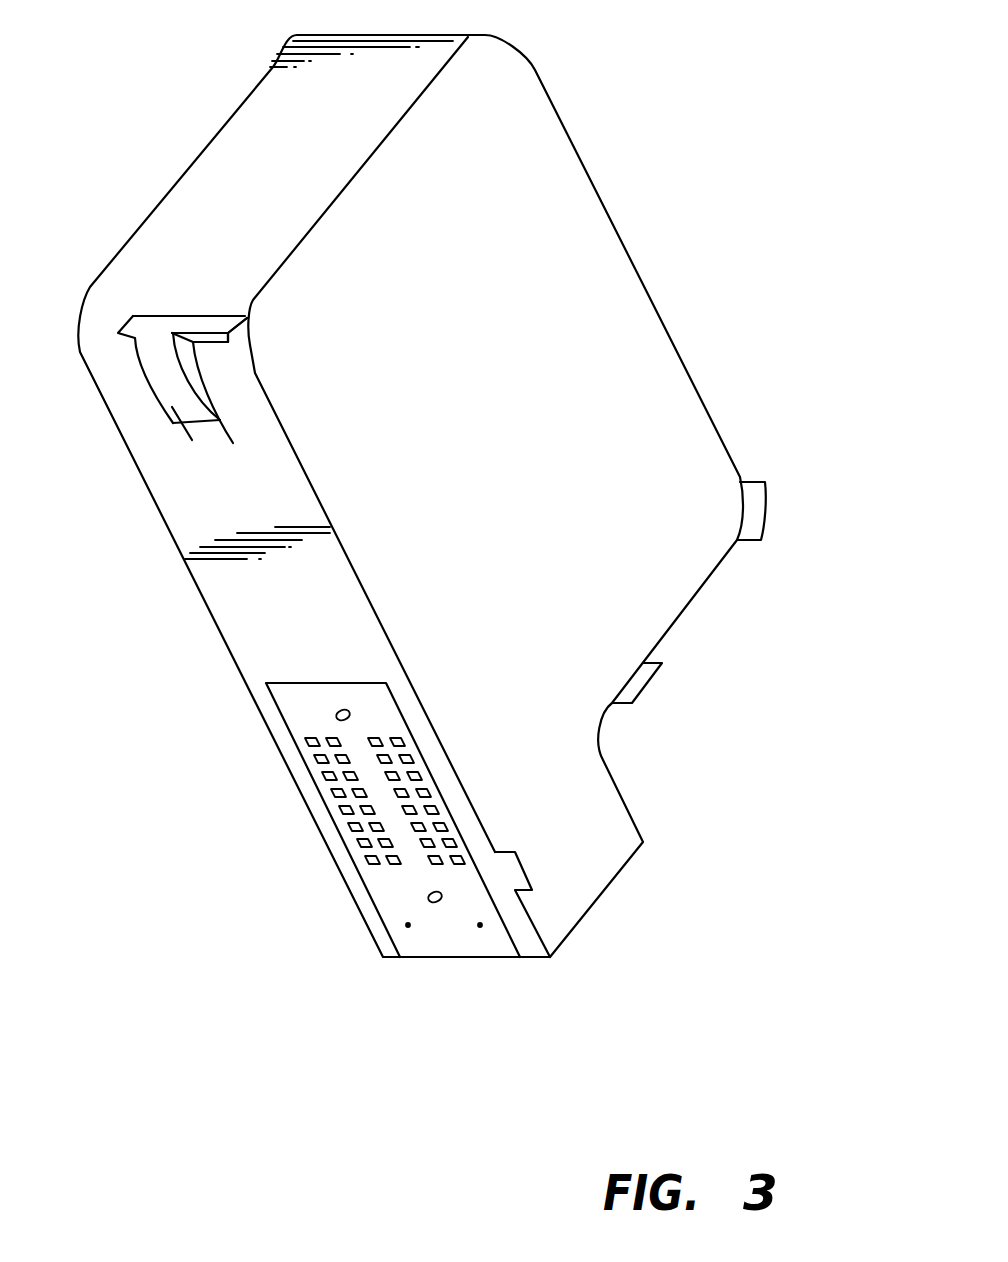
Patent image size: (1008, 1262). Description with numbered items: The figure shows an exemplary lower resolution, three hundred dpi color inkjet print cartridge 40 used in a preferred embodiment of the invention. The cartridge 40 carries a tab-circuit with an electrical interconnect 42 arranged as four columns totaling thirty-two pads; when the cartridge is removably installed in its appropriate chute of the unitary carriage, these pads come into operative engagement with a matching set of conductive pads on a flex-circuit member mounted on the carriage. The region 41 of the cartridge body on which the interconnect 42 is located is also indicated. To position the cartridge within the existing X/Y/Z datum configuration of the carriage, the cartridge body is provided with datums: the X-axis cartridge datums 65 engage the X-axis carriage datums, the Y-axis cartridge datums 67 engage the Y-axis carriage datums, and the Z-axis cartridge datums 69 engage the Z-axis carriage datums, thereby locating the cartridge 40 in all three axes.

The color inkjet cartridge 40 is at (575, 372).
The printhead 41 is at (453, 928).
The electrical interconnect 42 is at (380, 886).
The X-axis cartridge datums 65 is at (262, 326).
The Y-axis cartridge datums 67 is at (176, 430).
The Z-axis cartridge datums 69 is at (643, 690).